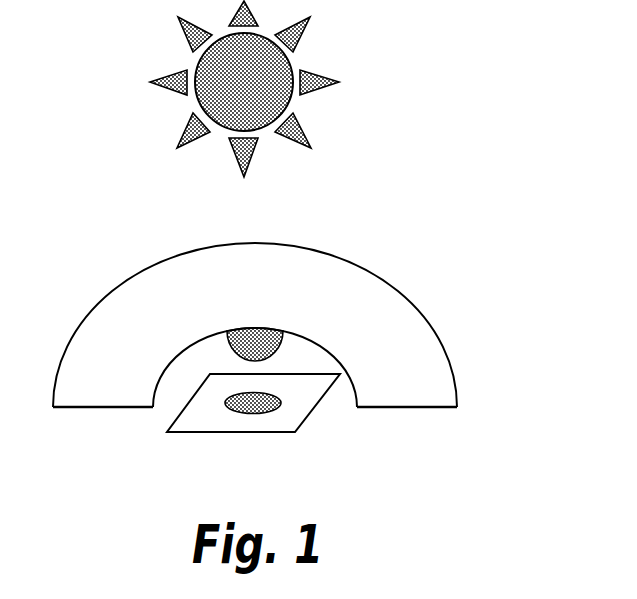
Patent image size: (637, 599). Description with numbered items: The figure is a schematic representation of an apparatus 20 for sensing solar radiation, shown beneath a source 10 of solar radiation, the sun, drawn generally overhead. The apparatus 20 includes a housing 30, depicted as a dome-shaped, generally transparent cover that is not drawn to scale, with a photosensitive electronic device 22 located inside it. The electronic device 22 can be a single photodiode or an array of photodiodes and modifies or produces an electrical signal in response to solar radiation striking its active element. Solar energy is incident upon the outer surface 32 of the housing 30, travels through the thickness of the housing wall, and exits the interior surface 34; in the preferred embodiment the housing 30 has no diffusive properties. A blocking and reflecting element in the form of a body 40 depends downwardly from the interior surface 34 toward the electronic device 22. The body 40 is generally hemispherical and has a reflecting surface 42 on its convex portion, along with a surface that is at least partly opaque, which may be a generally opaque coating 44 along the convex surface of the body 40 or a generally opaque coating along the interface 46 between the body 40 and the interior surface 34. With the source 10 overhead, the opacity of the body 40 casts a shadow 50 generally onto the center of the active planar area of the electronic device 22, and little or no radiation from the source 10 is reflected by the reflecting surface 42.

The source of solar radiation 10 is at (292, 65).
The apparatus 20 is at (442, 209).
The photosensitive electronic device 22 is at (287, 423).
The housing 30 is at (286, 364).
The outer surface 32 is at (93, 306).
The interior surface 34 is at (160, 383).
The body 40 is at (280, 337).
The reflecting surface 42 is at (280, 357).
The opaque coating 44 is at (230, 328).
The interface 46 is at (252, 328).
The shadow 50 is at (248, 408).